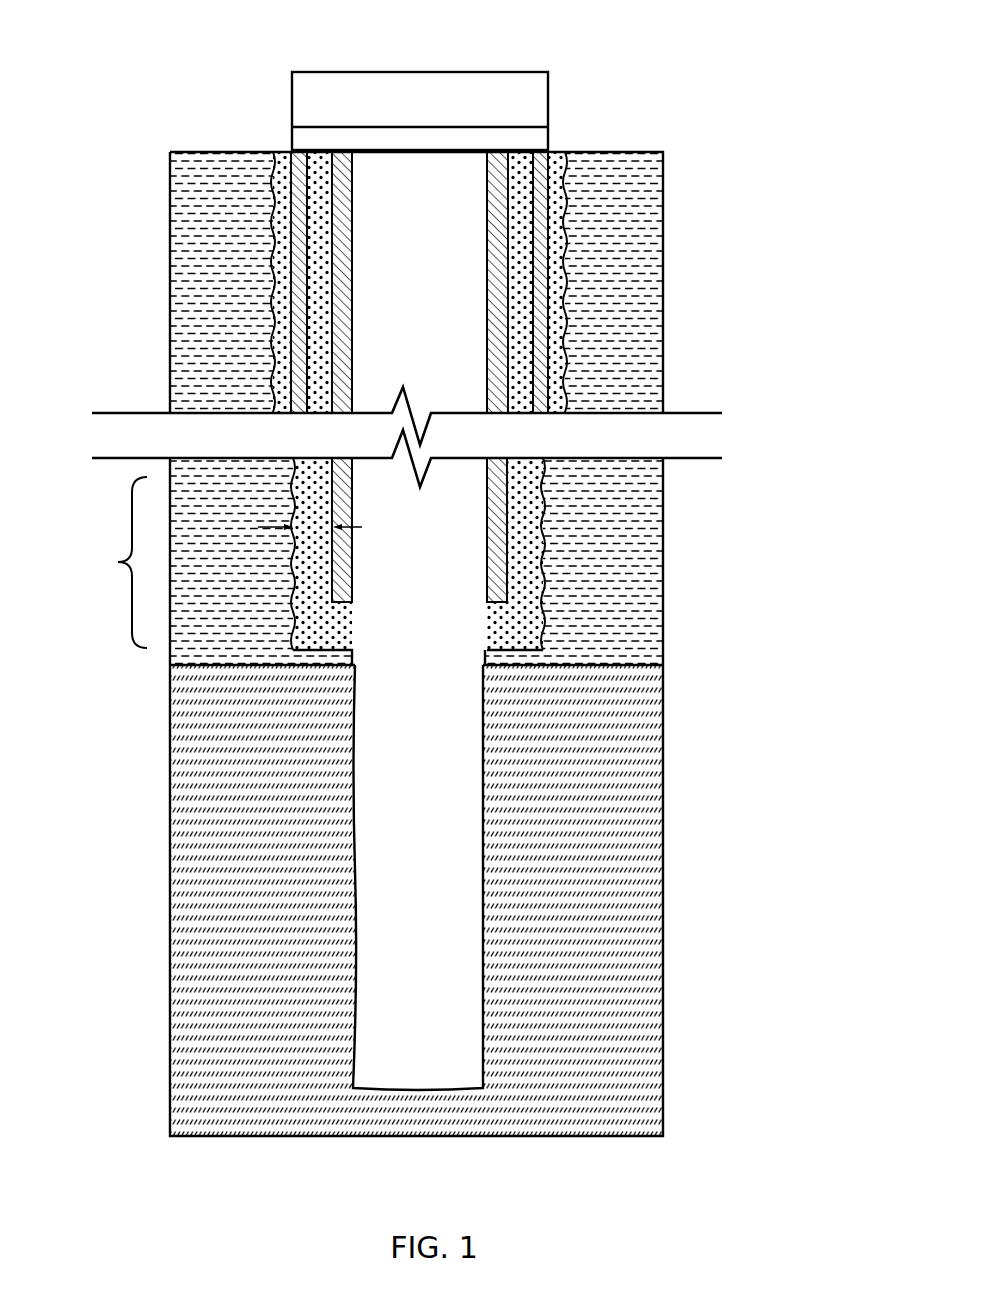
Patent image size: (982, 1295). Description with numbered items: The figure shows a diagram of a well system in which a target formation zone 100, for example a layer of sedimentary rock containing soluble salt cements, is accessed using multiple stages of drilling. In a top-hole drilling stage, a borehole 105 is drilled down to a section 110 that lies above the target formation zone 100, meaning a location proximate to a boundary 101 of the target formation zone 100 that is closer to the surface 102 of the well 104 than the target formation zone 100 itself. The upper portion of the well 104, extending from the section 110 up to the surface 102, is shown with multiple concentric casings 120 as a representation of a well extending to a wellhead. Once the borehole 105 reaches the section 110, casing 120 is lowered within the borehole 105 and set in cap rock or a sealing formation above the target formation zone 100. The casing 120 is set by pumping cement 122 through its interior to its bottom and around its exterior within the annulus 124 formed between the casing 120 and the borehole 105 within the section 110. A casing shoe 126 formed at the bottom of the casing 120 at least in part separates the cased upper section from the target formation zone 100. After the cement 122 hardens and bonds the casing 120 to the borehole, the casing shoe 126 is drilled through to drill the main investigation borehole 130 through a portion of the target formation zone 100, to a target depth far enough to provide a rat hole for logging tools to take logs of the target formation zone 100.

The target formation zone 100 is at (582, 750).
The boundary 101 is at (608, 665).
The surface 102 is at (480, 72).
The well 104 is at (352, 46).
The borehole 105 is at (290, 627).
The section 110 is at (107, 562).
The casing 120 is at (543, 227).
The cement 122 is at (533, 488).
The annulus 124 is at (304, 515).
The casing shoe 126 is at (508, 628).
The investigation borehole 130 is at (487, 1067).